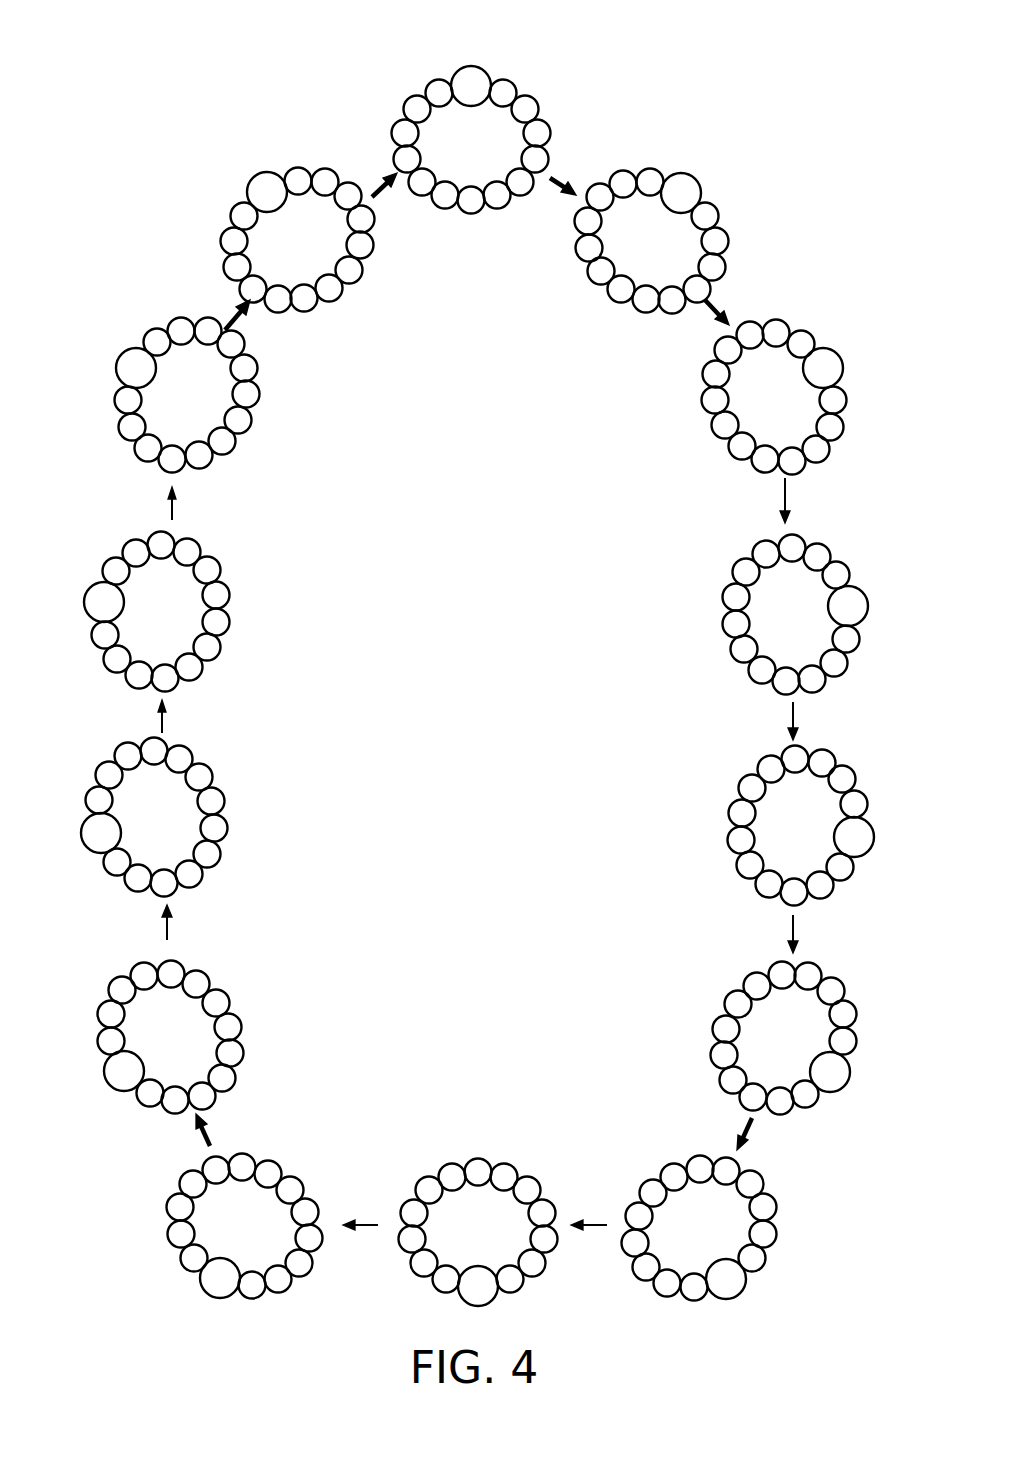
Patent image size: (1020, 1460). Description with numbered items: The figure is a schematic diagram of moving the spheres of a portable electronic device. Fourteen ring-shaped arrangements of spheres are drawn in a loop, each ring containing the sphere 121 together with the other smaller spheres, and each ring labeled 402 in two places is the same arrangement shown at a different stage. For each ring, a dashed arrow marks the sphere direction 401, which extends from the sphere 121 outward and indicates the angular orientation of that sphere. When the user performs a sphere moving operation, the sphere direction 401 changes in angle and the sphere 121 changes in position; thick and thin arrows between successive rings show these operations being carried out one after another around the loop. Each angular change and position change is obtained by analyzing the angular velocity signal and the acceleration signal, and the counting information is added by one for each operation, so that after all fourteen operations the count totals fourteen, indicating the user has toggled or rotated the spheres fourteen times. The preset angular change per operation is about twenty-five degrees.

The sphere 121 is at (453, 77).
The sphere direction 401 is at (471, 40).
The fan array 402 is at (179, 716).